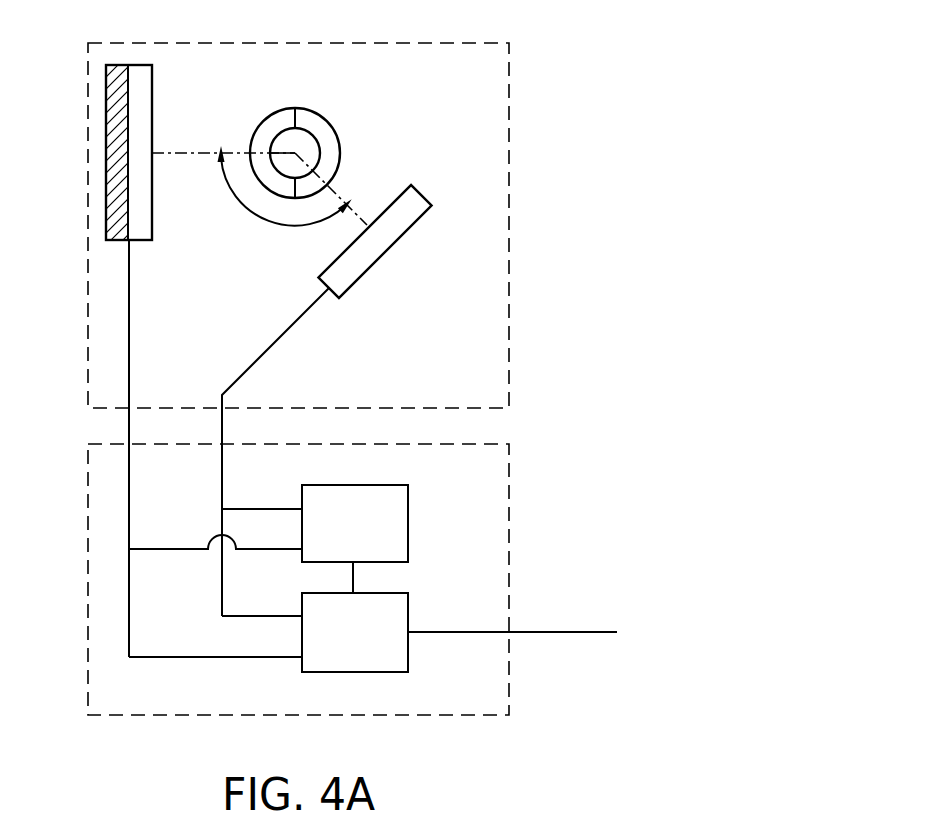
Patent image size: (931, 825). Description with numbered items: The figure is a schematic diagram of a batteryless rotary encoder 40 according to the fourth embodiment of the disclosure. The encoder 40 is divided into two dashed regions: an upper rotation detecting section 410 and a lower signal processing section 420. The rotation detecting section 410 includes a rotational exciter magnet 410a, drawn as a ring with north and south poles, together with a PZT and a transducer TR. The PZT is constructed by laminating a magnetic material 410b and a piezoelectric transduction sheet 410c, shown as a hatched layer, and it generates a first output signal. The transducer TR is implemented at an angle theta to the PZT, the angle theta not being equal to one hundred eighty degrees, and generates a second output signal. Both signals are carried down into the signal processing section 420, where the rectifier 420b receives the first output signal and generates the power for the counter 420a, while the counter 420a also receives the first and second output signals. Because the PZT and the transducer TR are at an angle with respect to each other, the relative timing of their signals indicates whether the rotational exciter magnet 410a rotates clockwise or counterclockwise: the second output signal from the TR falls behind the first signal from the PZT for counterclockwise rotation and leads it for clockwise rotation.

The batteryless rotary encoder 40 is at (603, 35).
The rotation detecting section 410 is at (88, 95).
The rotational exciter magnet 410a is at (307, 108).
The magnetic material 410b is at (140, 80).
The piezoelectric transduction sheet 410c is at (115, 77).
The element PZT is at (106, 153).
The transducer TR is at (421, 194).
The signal processing section 420 is at (88, 508).
The counter 420a is at (408, 593).
The rectifier 420b is at (408, 484).